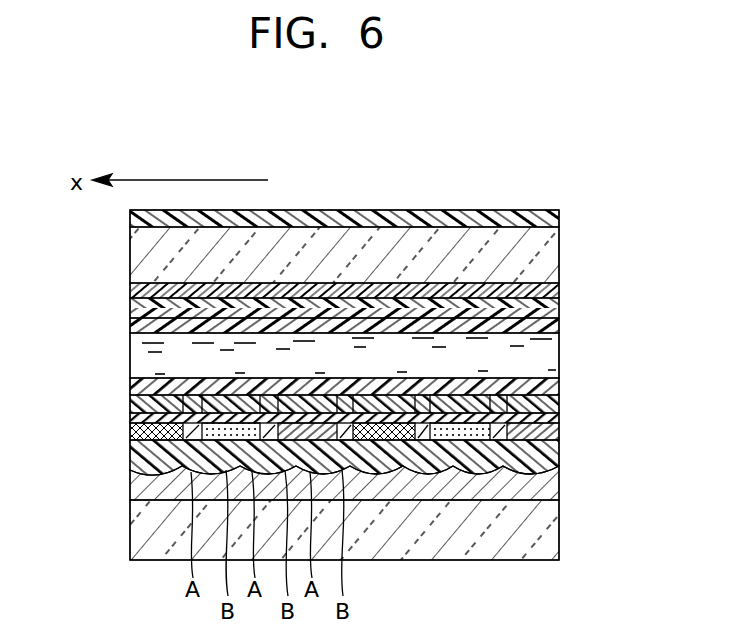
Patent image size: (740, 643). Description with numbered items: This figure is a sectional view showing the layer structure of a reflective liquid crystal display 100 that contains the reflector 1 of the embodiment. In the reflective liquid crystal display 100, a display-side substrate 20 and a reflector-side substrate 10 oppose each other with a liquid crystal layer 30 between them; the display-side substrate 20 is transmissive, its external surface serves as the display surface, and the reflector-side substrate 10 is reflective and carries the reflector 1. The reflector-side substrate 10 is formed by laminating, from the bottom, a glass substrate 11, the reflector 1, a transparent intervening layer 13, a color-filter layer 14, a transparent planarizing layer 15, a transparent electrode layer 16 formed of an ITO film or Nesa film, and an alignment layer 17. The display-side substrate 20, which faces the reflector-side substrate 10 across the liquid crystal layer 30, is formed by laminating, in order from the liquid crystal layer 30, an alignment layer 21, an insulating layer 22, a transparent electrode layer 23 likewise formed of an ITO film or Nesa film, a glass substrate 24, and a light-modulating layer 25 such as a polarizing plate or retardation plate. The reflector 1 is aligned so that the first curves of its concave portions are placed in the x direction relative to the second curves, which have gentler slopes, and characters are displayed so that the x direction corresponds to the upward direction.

The reflective liquid crystal display 100 is at (415, 190).
The reflector-side substrate 10 is at (63, 333).
The glass substrate 11 is at (131, 525).
The reflector 1 is at (131, 487).
The transparent intervening layer 13 is at (131, 455).
The color-filter layer 14 is at (131, 431).
The transparent planarizing layer 15 is at (131, 418).
The transparent electrode layer 16 is at (131, 402).
The alignment layer 17 is at (131, 383).
The display-side substrate 20 is at (650, 193).
The alignment layer 21 is at (560, 325).
The insulating layer 22 is at (560, 306).
The transparent electrode layer 23 is at (560, 290).
The glass substrate 24 is at (560, 250).
The light-modulating layer 25 is at (560, 218).
The liquid crystal layer 30 is at (560, 352).